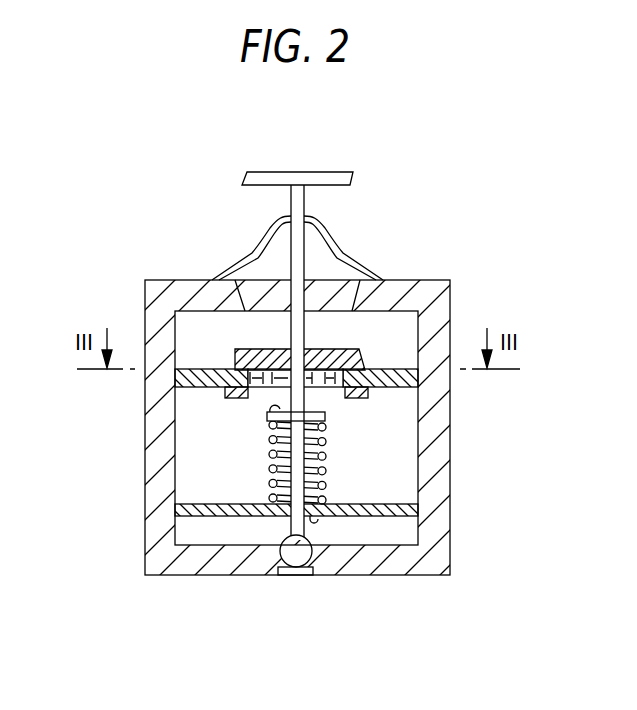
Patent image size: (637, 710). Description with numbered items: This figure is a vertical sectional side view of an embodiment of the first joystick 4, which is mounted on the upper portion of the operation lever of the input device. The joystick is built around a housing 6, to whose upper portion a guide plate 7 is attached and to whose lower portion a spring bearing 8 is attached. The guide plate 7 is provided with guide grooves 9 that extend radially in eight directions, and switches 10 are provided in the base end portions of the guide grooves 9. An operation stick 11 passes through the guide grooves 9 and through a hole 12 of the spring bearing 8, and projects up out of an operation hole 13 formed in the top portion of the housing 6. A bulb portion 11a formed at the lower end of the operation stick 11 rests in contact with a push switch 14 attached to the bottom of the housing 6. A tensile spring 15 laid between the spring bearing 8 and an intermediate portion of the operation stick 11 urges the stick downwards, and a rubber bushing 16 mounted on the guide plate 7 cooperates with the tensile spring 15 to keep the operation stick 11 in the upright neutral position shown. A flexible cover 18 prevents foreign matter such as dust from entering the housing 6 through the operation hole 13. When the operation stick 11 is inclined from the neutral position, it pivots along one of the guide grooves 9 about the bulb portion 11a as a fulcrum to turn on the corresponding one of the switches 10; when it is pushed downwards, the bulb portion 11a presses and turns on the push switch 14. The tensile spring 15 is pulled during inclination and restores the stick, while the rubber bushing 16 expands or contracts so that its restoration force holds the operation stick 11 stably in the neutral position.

The first joystick 4 is at (128, 590).
The housing 6 is at (147, 461).
The guide plate 7 is at (197, 388).
The spring bearing 8 is at (198, 515).
The guide grooves 9 is at (332, 377).
The switches 10 is at (364, 398).
The operation stick 11 is at (355, 175).
The bulb portion 11a is at (303, 552).
The hole 12 is at (283, 512).
The operation hole 13 is at (260, 290).
The push switch 14 is at (292, 577).
The tensile spring 15 is at (268, 472).
The rubber bushing 16 is at (232, 360).
The flexible cover 18 is at (257, 238).